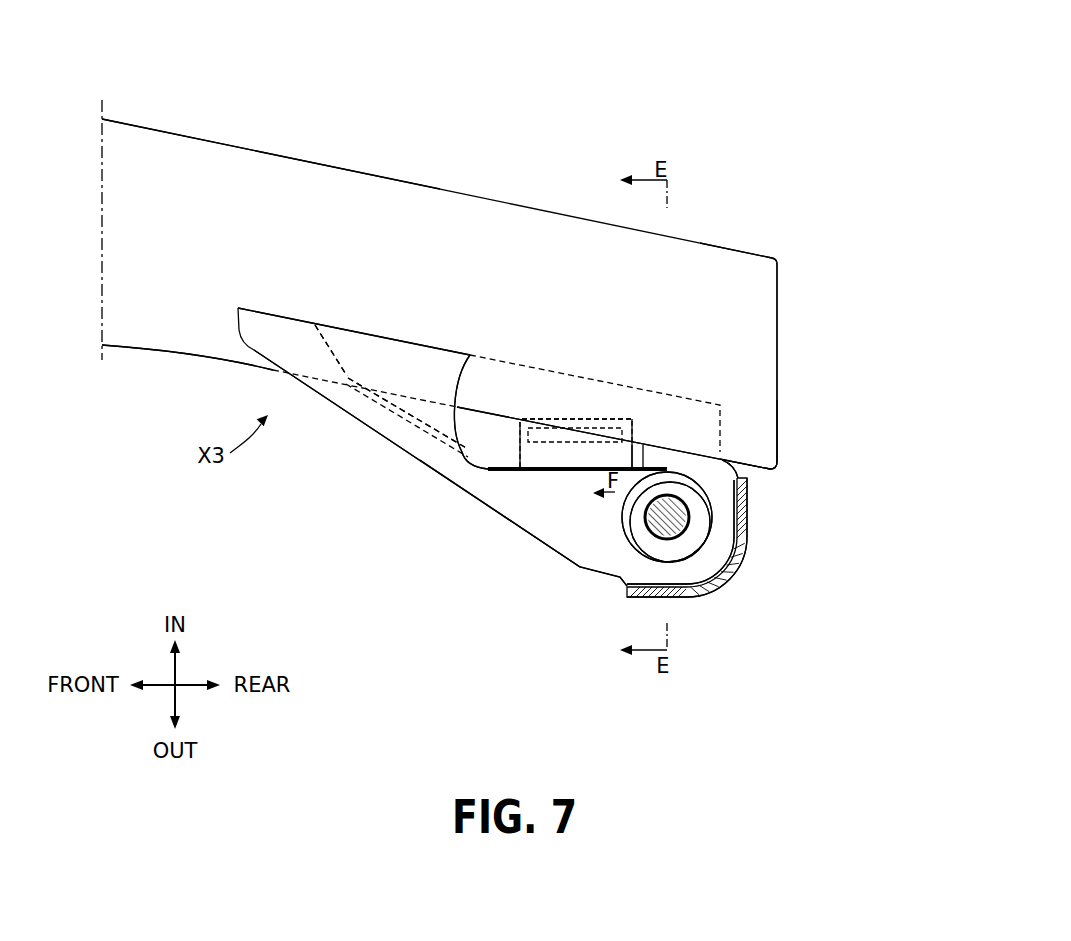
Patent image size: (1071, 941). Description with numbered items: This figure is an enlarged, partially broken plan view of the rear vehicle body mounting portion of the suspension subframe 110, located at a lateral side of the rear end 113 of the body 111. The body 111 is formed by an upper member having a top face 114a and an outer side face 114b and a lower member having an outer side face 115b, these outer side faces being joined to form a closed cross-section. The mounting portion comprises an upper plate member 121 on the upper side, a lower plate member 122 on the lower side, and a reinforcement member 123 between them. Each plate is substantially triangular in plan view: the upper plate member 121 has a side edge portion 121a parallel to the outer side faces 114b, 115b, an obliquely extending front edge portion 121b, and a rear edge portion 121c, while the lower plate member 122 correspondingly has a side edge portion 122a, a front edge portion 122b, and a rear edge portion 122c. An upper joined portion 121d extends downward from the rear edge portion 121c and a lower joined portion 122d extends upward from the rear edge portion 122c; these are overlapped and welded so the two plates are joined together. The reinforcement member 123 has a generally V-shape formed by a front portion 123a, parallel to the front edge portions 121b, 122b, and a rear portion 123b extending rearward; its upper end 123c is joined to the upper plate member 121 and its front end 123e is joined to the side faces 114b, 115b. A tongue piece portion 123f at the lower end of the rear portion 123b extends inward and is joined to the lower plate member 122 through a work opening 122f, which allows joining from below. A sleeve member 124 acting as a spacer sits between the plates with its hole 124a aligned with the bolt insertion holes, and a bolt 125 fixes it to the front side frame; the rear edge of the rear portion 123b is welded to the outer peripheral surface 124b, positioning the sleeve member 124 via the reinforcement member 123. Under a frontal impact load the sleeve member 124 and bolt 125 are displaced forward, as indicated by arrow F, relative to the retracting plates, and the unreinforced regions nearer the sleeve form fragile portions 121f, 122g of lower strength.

The suspension subframe 110 is at (201, 139).
The body 111 is at (318, 180).
The rear end 113 is at (755, 264).
The top face 114a is at (733, 402).
The outer side face 114b is at (265, 372).
The outer side face 115b is at (187, 385).
The upper plate member 121 is at (390, 428).
The side edge portion 121a is at (372, 334).
The front edge portion 121b is at (442, 477).
The rear edge portion 121c is at (747, 490).
The upper joined portion 121d is at (687, 537).
The fragile portion 121f is at (635, 517).
The lower plate member 122 is at (503, 505).
The side edge portion 122a is at (483, 357).
The front edge portion 122b is at (557, 553).
The rear edge portion 122c is at (737, 530).
The lower joined portion 122d is at (680, 532).
The work opening 122f is at (600, 427).
The fragile portion 122g is at (560, 528).
The reinforcement member 123 is at (543, 482).
The front portion 123a is at (378, 395).
The rear portion 123b is at (650, 445).
The upper end 123c is at (507, 462).
The front end 123e is at (315, 325).
The tongue piece portion 123f is at (512, 422).
The sleeve member 124 is at (682, 551).
The hole 124a is at (637, 525).
The outer peripheral surface 124b is at (697, 464).
The bolt 125 is at (727, 556).